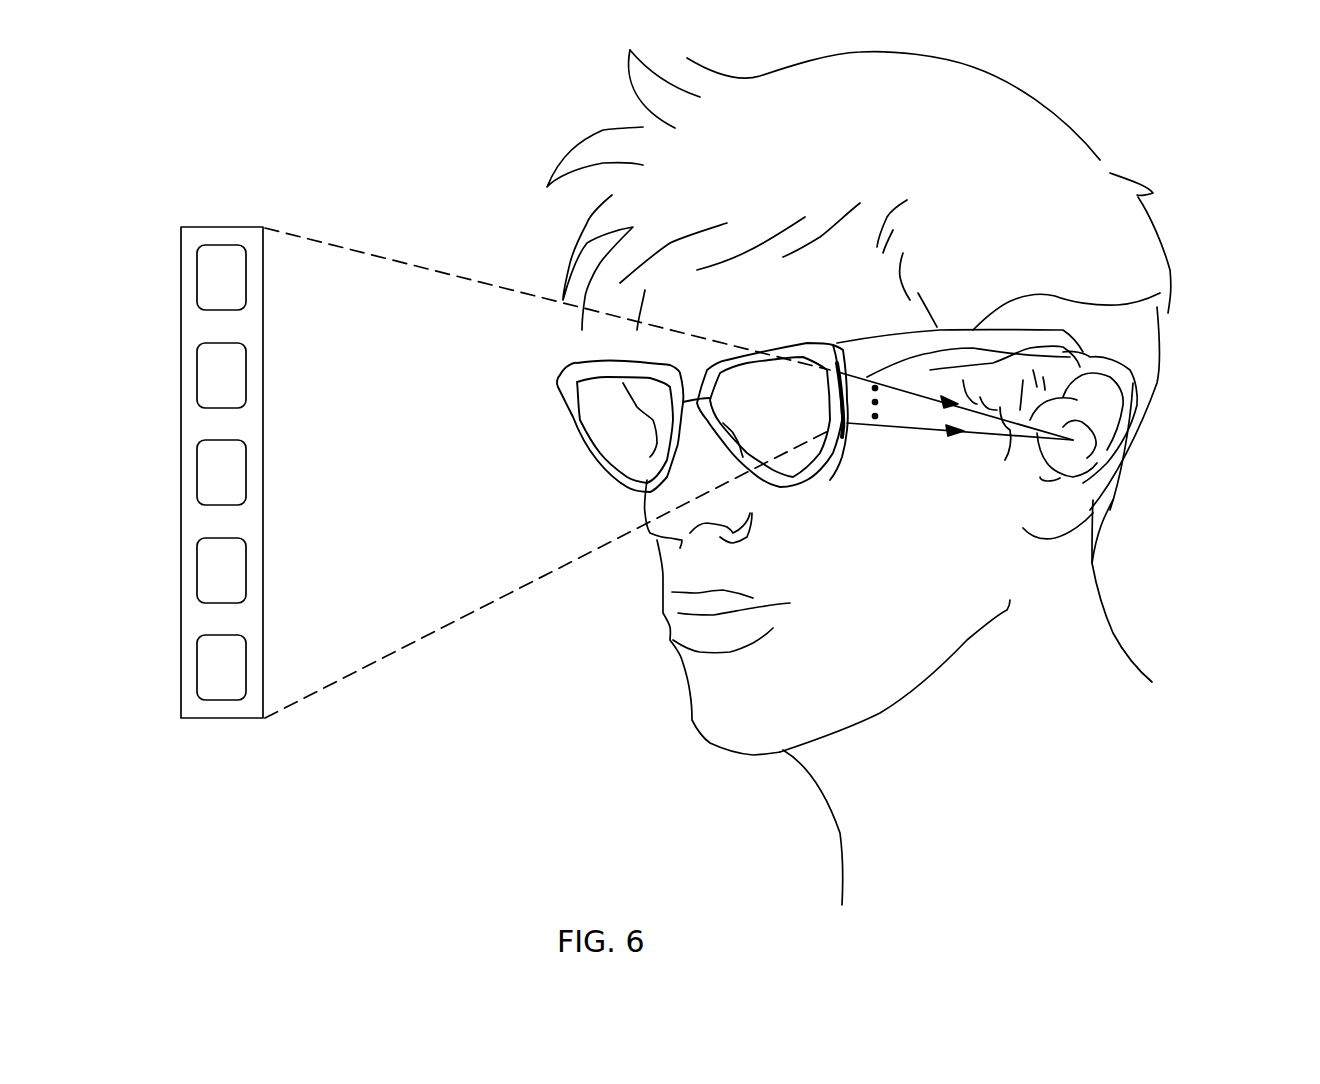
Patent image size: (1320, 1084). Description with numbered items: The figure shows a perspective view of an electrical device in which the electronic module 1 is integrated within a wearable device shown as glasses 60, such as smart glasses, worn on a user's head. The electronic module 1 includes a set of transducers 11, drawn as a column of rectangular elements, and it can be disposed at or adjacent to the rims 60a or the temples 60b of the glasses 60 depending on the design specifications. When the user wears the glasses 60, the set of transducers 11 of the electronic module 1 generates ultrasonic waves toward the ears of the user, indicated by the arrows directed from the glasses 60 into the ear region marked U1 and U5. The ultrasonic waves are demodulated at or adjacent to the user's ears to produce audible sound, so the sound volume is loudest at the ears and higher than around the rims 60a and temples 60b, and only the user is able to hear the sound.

The electronic module 1 is at (468, 416).
The set of transducers 11 is at (220, 375).
The glasses 60 is at (1240, 270).
The rims 60a is at (1030, 377).
The temples 60b is at (1130, 304).
The user's ear U1 is at (1063, 400).
The ear canal U5 is at (1080, 460).